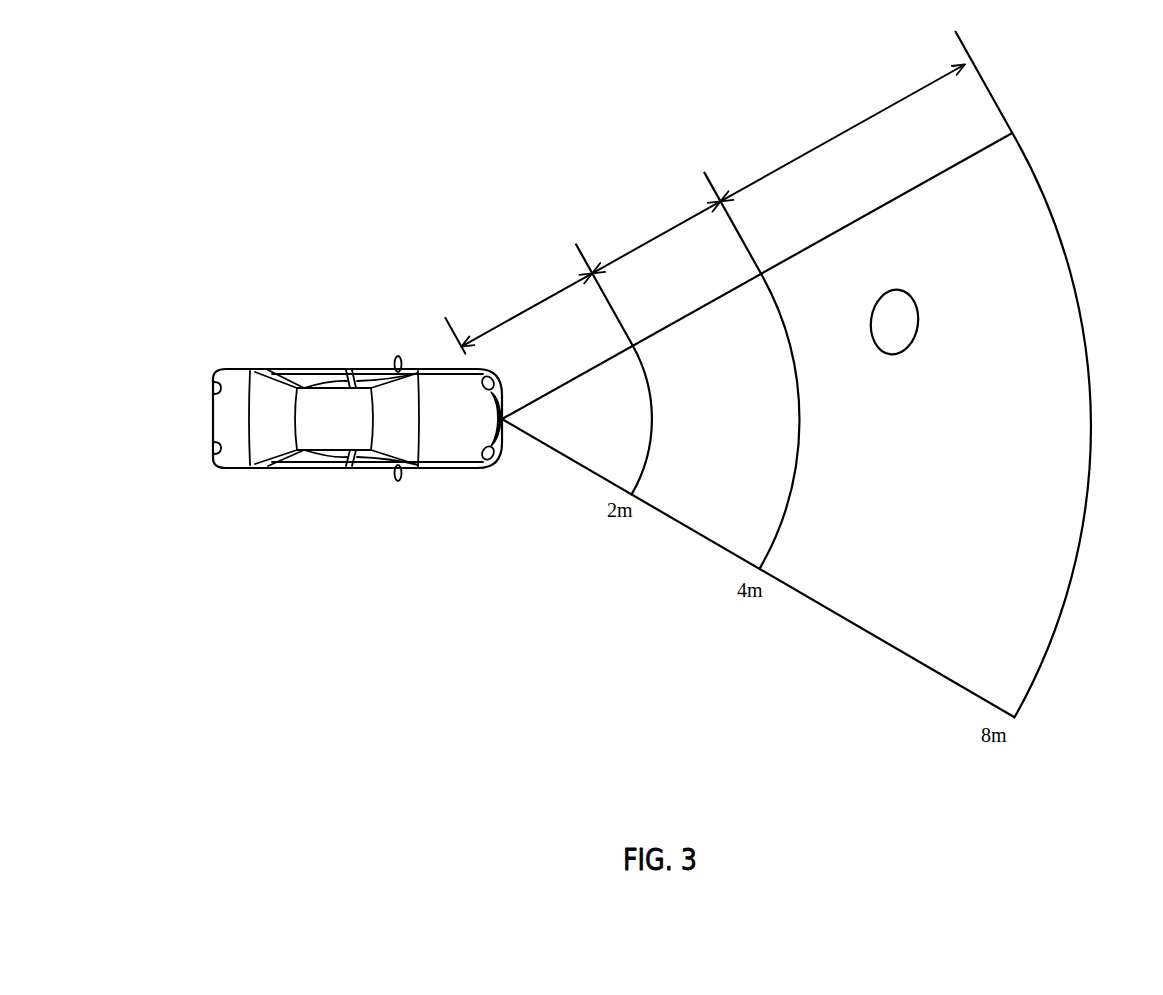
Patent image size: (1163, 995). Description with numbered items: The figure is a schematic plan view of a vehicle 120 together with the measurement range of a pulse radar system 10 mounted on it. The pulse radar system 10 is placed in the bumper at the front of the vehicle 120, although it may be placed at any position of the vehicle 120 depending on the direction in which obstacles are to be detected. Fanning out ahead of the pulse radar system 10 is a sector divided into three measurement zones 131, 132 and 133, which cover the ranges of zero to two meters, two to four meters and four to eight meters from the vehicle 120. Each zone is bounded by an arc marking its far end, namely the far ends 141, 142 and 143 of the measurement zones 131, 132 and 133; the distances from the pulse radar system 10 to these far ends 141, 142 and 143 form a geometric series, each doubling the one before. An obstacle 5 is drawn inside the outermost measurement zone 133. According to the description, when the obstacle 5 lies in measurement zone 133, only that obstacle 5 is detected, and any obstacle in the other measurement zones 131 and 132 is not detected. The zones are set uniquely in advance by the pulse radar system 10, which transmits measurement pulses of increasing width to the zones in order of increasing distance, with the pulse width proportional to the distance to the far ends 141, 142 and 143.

The obstacle 5 is at (897, 290).
The pulse radar system 10 is at (506, 426).
The vehicle 120 is at (328, 369).
The measurement zone 131 is at (572, 240).
The measurement zone 132 is at (700, 168).
The measurement zone 133 is at (951, 28).
The far end 141 is at (652, 424).
The far end 142 is at (799, 424).
The far end 143 is at (1092, 424).